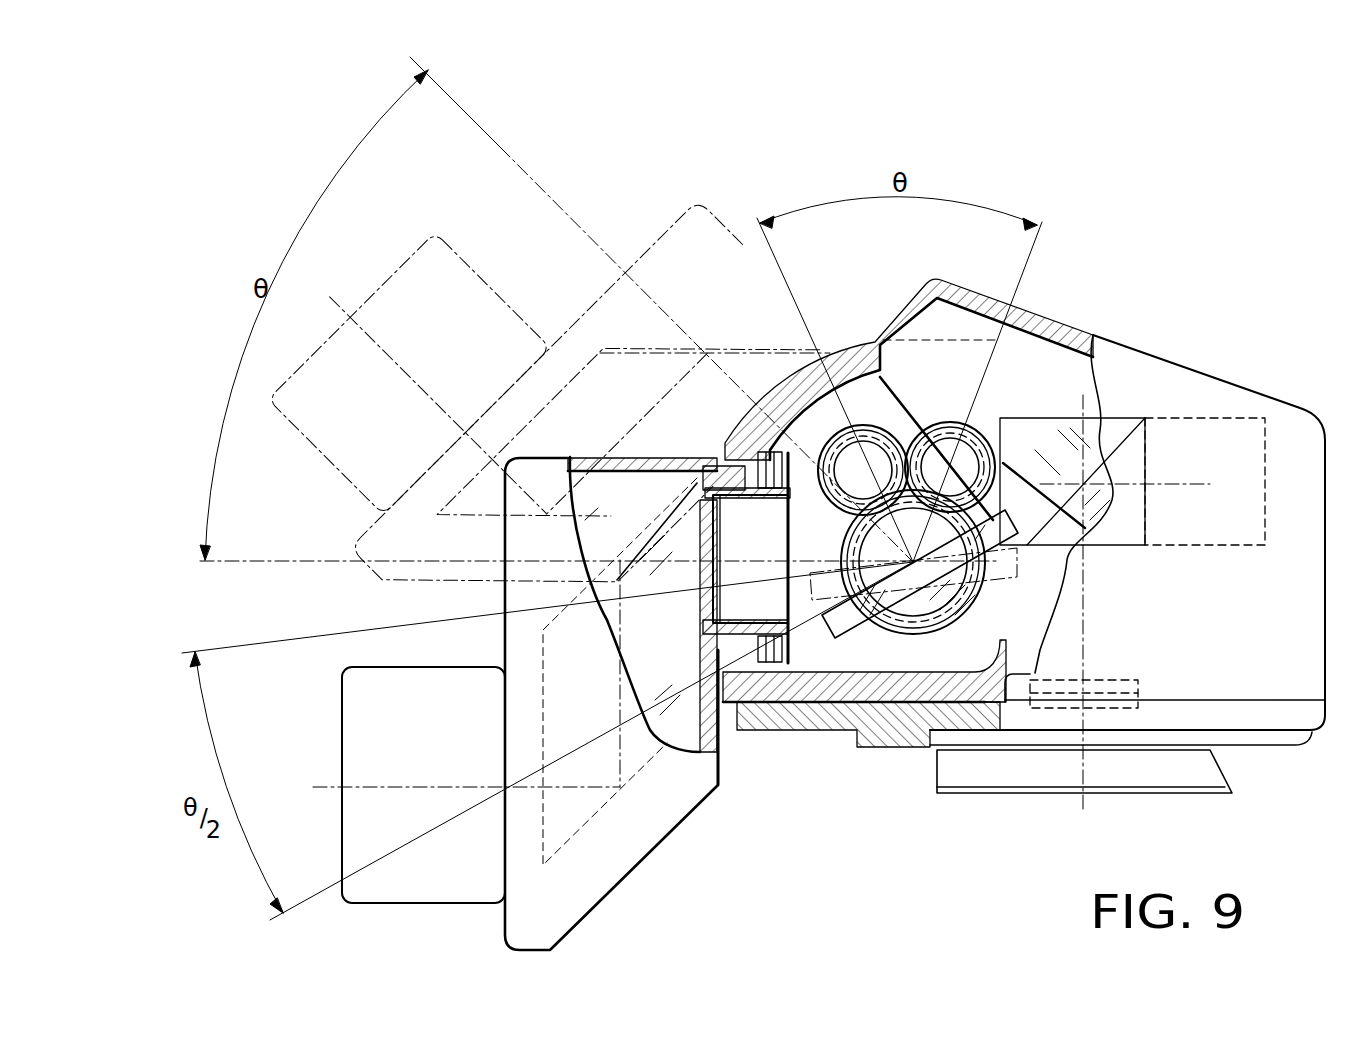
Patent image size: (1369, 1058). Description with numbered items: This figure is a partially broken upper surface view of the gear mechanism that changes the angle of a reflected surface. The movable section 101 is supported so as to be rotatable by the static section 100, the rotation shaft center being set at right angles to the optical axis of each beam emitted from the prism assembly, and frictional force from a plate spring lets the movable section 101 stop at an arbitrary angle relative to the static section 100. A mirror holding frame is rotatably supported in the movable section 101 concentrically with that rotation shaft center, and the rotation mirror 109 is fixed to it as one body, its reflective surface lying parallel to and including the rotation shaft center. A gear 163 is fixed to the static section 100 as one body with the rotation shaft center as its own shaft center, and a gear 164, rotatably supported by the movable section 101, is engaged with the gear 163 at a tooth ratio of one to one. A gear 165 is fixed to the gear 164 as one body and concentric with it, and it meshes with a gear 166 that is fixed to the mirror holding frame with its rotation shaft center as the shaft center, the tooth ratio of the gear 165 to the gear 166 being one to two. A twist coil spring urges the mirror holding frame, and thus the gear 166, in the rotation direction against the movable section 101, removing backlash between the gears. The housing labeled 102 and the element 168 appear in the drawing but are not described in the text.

The static section 100 is at (885, 735).
The movable section 101 is at (750, 685).
The movable finder housing 102 is at (600, 886).
The rotation mirror 109 is at (813, 675).
The gear 163 is at (835, 590).
The gear 164 is at (788, 412).
The gear 165 is at (890, 412).
The gear 166 is at (853, 538).
The finder lens 168 is at (903, 628).